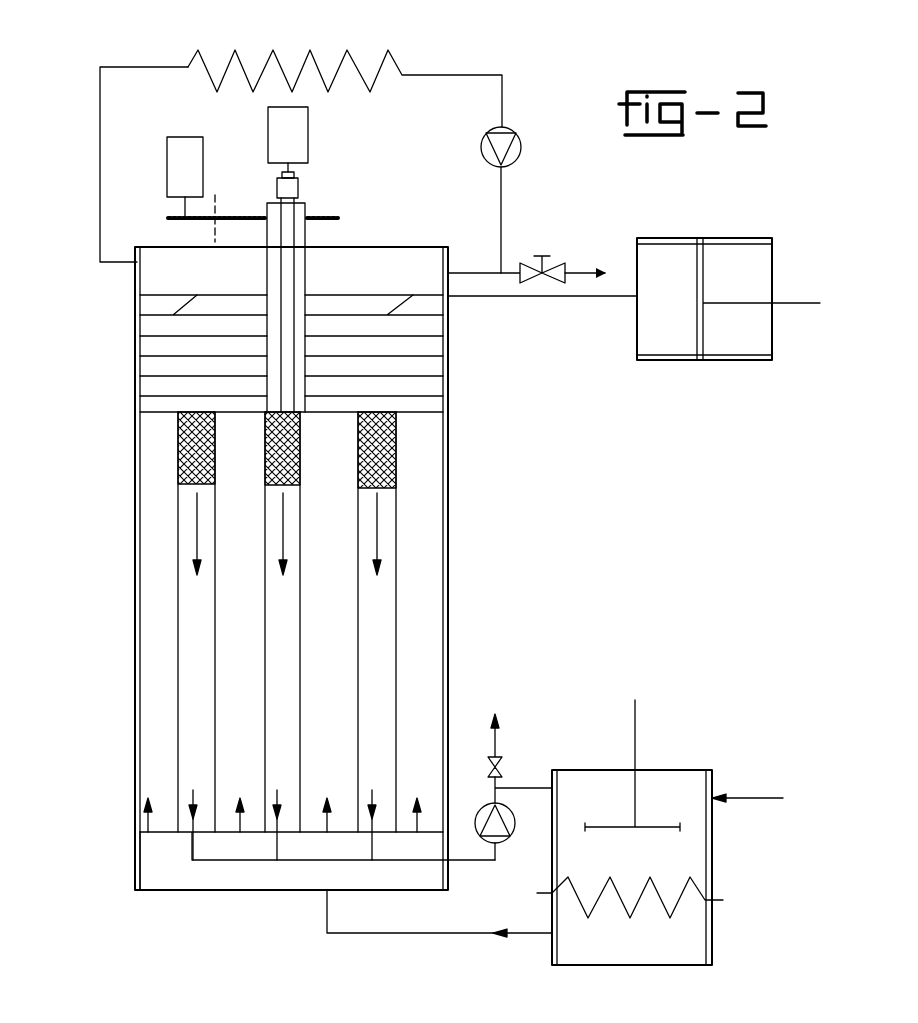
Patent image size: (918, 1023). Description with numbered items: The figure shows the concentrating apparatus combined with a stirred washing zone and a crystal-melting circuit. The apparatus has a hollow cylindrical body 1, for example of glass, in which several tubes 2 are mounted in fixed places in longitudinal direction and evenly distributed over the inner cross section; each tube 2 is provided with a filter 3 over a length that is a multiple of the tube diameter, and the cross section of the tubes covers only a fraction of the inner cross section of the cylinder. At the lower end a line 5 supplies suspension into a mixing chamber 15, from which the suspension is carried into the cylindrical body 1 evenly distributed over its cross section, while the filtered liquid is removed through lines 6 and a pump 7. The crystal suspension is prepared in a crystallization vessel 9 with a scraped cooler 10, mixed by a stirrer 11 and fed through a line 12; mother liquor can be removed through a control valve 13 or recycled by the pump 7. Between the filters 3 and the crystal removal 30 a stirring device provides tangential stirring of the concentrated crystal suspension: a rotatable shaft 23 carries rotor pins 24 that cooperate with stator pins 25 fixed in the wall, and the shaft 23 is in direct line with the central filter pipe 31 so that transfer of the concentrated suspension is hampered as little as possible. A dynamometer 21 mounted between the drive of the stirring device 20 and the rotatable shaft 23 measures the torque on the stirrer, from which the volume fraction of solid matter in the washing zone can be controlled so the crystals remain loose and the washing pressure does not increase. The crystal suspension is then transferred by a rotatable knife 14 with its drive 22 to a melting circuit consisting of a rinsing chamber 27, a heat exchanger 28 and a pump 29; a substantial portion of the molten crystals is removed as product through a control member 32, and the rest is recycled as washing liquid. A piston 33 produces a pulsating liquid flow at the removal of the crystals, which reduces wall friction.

The hollow cylindrical body 1 is at (135, 505).
The tube 2 is at (193, 627).
The filter 3 is at (190, 450).
The line 5 is at (418, 935).
The lines 6 is at (235, 862).
The pump 7 is at (515, 820).
The crystallization vessel 9 is at (623, 968).
The scraped cooler 10 is at (700, 882).
The stirrer 11 is at (640, 752).
The line 12 is at (755, 802).
The control valve 13 is at (505, 765).
The rotatable knife 14 is at (448, 310).
The mixing chamber 15 is at (158, 862).
The drive of the stirring device 20 is at (300, 140).
The dynamometer 21 is at (298, 185).
The drive 22 is at (190, 172).
The rotatable shaft 23 is at (282, 370).
The rotor pins 24 is at (180, 376).
The stator pins 25 is at (160, 347).
The rinsing chamber 27 is at (387, 270).
The heat exchanger 28 is at (349, 50).
The pump 29 is at (519, 147).
The crystal removal 30 is at (100, 190).
The central filter pipe 31 is at (285, 642).
The control member 32 is at (548, 268).
The piston 33 is at (697, 325).